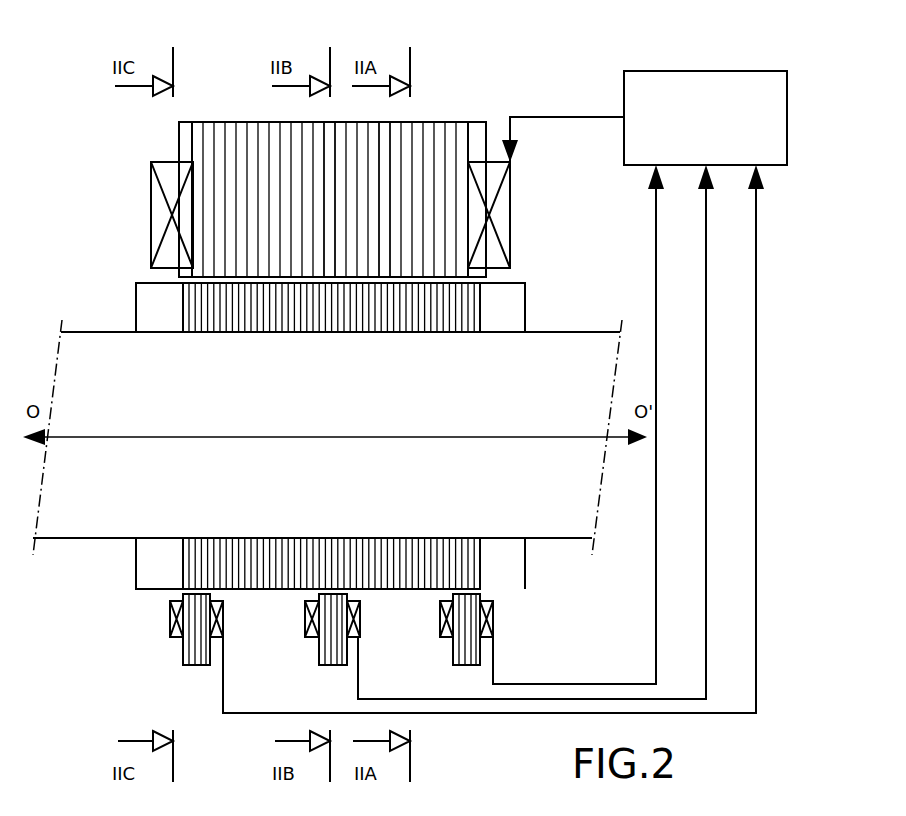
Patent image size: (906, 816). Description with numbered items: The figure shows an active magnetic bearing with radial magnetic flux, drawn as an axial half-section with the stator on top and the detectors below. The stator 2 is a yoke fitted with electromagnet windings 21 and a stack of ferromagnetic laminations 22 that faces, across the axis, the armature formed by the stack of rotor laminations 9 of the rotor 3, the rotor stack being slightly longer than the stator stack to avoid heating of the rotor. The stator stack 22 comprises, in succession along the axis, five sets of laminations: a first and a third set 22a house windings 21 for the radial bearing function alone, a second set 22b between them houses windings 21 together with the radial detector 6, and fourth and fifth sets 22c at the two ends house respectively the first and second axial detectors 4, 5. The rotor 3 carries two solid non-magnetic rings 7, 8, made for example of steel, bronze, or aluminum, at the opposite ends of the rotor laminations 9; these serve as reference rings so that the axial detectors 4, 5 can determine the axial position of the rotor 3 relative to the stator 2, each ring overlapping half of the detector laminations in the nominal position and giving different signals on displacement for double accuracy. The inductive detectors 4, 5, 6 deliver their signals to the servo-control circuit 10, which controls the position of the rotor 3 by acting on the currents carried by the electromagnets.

The stator 2 is at (467, 120).
The rotor 3 is at (537, 355).
The first axial detector 4 is at (186, 652).
The second axial detector 5 is at (461, 647).
The radial detector 6 is at (328, 650).
The non-magnetic ring 7 is at (145, 302).
The non-magnetic ring 8 is at (513, 297).
The stack of rotor laminations 9 is at (332, 310).
The servo-control circuit 10 is at (628, 83).
The electromagnet windings 21 is at (160, 207).
The stack of ferromagnetic laminations 22 is at (262, 95).
The first and third sets of laminations 22a is at (222, 127).
The second set of laminations 22b is at (332, 175).
The fourth and fifth sets of laminations 22c is at (183, 135).